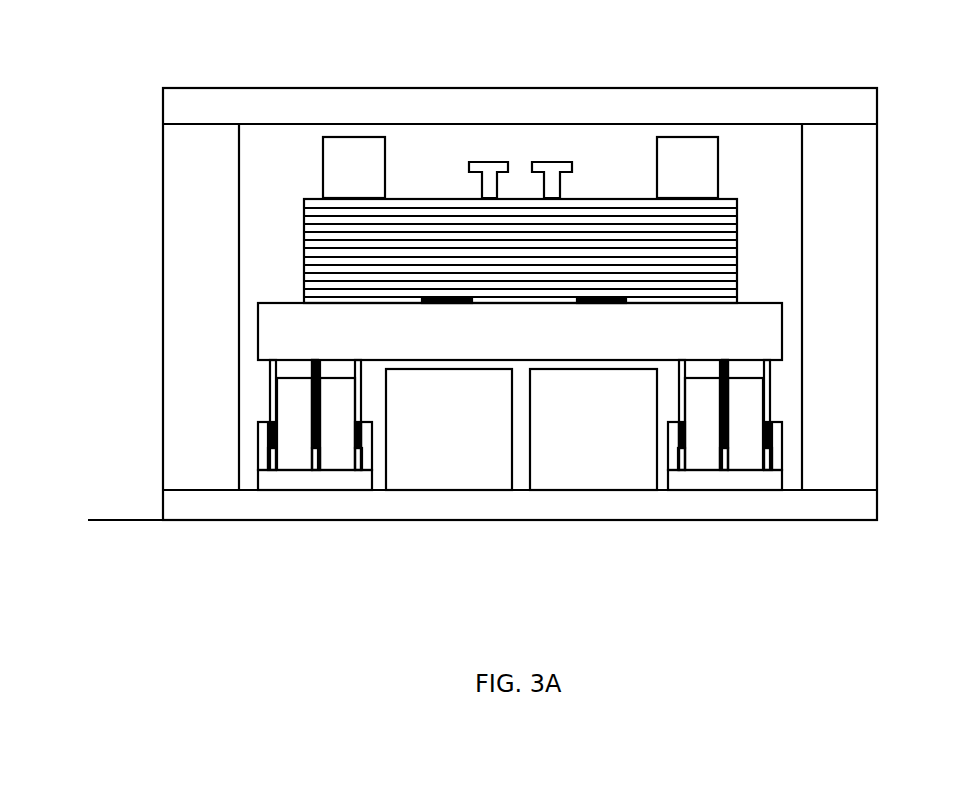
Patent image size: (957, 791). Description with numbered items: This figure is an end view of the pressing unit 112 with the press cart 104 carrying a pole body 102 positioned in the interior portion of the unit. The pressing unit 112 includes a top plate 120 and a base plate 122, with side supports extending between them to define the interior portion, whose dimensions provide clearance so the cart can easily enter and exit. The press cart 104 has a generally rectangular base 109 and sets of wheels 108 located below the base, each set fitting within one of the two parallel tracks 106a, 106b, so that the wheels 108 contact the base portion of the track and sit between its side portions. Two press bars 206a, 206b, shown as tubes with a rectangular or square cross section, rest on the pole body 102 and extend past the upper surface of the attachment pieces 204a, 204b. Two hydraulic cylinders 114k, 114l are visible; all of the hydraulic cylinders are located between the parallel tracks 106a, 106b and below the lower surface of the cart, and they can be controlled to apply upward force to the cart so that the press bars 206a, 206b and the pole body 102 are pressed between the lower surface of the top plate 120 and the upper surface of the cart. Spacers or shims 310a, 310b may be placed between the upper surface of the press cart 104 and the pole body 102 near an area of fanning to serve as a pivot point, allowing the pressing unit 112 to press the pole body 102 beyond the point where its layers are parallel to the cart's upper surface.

The pole body 102 is at (742, 250).
The press cart 104 is at (254, 330).
The parallel track 106a is at (788, 480).
The parallel track 106b is at (254, 483).
The wheels 108 is at (294, 405).
The base 109 is at (762, 330).
The pressing unit 112 is at (463, 84).
The hydraulic cylinder 114k is at (424, 465).
The hydraulic cylinder 114l is at (597, 467).
The top plate 120 is at (860, 112).
The base plate 122 is at (513, 502).
The attachment piece 204a is at (622, 170).
The attachment piece 204b is at (465, 172).
The press bar 206a is at (762, 170).
The press bar 206b is at (319, 175).
The spacer 310a is at (445, 308).
The spacer 310b is at (599, 308).